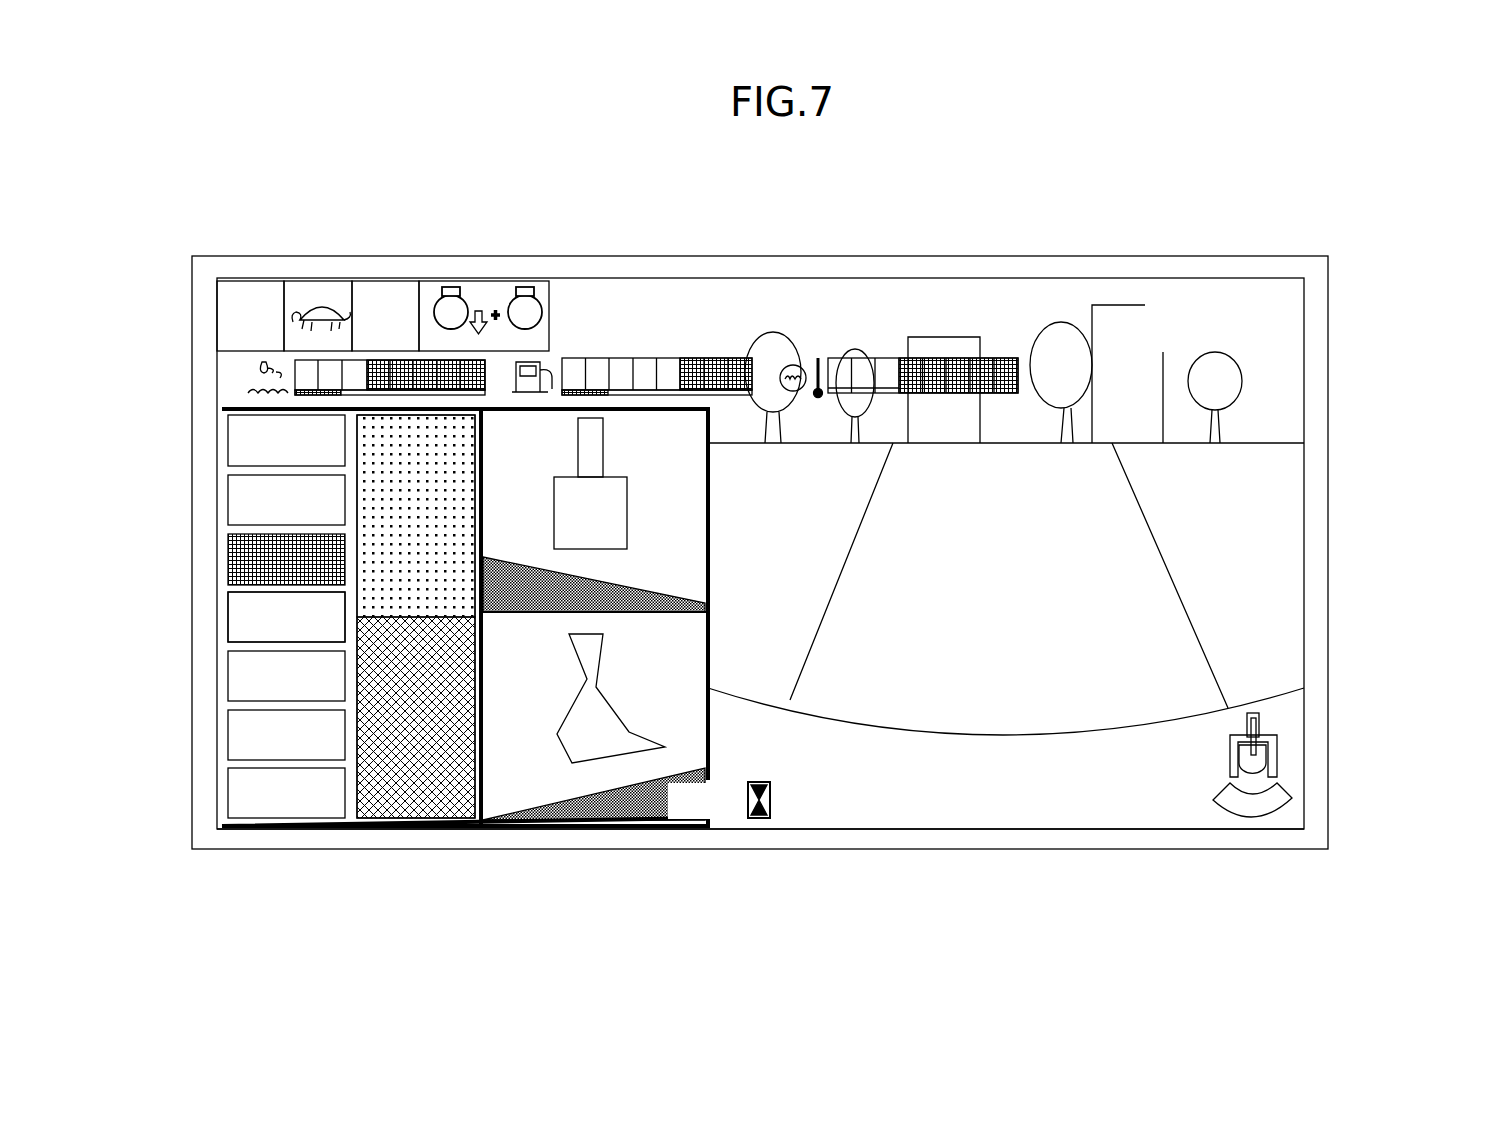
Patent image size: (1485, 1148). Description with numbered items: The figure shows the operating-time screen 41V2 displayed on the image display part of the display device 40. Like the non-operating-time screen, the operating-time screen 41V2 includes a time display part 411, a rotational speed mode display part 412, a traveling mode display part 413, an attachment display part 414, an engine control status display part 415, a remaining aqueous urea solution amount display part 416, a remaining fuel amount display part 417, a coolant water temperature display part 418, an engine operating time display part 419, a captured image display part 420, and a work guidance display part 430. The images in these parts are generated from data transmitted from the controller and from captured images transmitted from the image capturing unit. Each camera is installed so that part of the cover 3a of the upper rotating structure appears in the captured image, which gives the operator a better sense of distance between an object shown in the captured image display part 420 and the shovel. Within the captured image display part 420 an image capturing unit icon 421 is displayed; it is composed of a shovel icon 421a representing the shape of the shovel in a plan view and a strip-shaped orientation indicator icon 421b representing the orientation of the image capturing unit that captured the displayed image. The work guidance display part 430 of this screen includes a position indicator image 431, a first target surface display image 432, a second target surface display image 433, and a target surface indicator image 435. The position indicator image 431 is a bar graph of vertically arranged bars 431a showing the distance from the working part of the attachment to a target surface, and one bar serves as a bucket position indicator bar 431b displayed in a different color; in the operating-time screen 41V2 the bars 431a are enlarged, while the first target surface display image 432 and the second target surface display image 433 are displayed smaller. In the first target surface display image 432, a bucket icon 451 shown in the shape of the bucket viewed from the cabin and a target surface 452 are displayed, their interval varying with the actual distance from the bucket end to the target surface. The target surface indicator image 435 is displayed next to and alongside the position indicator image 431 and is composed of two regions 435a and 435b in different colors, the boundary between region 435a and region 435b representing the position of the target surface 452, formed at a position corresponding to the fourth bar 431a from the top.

The display device 40 is at (1291, 254).
The operating-time screen 41V2 is at (1059, 275).
The time display part 411 is at (1205, 296).
The rotational speed mode display part 412 is at (253, 293).
The traveling mode display part 413 is at (322, 293).
The attachment display part 414 is at (386, 292).
The engine control status display part 415 is at (483, 293).
The remaining aqueous urea solution amount display part 416 is at (248, 376).
The remaining fuel amount display part 417 is at (650, 357).
The coolant water temperature display part 418 is at (885, 357).
The engine operating time display part 419 is at (757, 821).
The captured image display part 420 is at (1295, 543).
The image capturing unit icon 421 is at (1344, 765).
The shovel icon 421a is at (1282, 752).
The orientation indicator icon 421b is at (1293, 795).
The work guidance display part 430 is at (219, 443).
The position indicator image 431 is at (283, 829).
The bars 431a is at (233, 617).
The bucket position indicator bar 431b is at (237, 556).
The first target surface display image 432 is at (709, 503).
The second target surface display image 433 is at (696, 645).
The target surface indicator image 435 is at (408, 829).
The region 435a is at (483, 443).
The region 435b is at (476, 687).
The bucket icon 451 is at (635, 463).
The target surface 452 is at (660, 572).
The cover 3a is at (1037, 822).